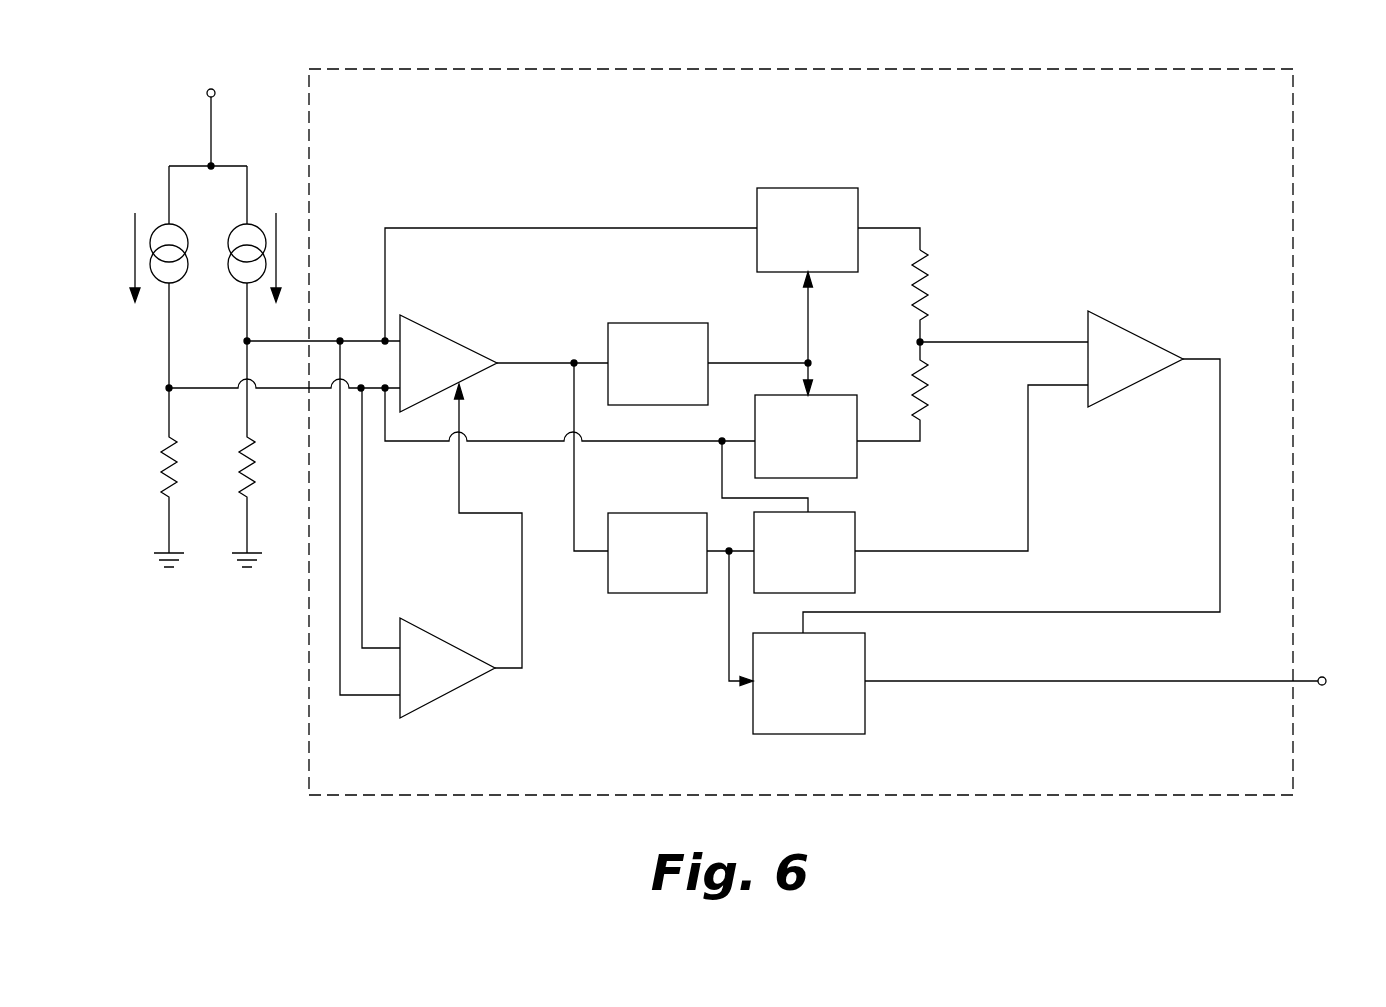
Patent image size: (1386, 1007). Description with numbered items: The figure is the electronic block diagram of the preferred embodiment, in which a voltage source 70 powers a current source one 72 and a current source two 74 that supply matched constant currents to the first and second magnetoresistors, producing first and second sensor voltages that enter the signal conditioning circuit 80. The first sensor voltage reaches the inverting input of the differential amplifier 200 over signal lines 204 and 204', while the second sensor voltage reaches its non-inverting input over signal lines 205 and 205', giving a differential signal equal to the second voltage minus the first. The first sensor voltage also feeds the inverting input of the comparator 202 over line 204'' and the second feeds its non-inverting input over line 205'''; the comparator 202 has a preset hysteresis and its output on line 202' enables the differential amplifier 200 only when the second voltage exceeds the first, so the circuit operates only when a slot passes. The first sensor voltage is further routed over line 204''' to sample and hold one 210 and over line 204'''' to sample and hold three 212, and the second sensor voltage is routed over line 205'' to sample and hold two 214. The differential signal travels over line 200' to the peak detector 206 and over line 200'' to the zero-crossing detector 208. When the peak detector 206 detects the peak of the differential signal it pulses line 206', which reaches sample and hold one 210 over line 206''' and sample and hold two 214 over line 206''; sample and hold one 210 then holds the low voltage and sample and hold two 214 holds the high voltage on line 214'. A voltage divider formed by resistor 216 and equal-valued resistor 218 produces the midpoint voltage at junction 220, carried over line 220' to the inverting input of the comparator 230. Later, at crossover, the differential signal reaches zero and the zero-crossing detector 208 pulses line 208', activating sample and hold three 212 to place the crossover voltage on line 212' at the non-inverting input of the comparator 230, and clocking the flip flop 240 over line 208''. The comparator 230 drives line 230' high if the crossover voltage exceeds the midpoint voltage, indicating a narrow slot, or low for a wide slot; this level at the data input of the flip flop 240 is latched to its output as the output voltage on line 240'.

The voltage source 70 is at (208, 310).
The current source1 72 is at (166, 224).
The current source2 74 is at (250, 224).
The signal conditioning circuit 80 is at (433, 68).
The differential amplifier 200 is at (448, 331).
The signal line 200' is at (552, 322).
The signal line 200'' is at (626, 457).
The comparator 202 is at (448, 637).
The signal line 202' is at (511, 526).
The signal line 204 is at (196, 402).
The signal line 204' is at (379, 434).
The signal line 204'' is at (407, 518).
The signal line 204''' is at (570, 443).
The signal line 204'''' is at (708, 476).
The signal line 205 is at (304, 256).
The signal line 205' is at (374, 264).
The signal line 205'' is at (571, 239).
The signal line 205''' is at (377, 550).
The peak detector 206 is at (648, 332).
The signal line 206' is at (731, 327).
The signal line 206'' is at (773, 317).
The signal line 206''' is at (853, 348).
The zero-crossing detector 208 is at (657, 588).
The signal line 208' is at (712, 513).
The signal line 208'' is at (701, 634).
The sample and hold1 210 is at (858, 458).
The sample and hold3 212 is at (857, 539).
The signal line 212' is at (971, 492).
The sample and hold2 214 is at (838, 193).
The signal line 214' is at (930, 202).
The resistor 216 is at (930, 257).
The resistor 218 is at (922, 364).
The junction 220 is at (936, 355).
The signal line 220' is at (1014, 296).
The comparator 230 is at (1136, 326).
The signal line 230' is at (1011, 496).
The flip flop 240 is at (826, 701).
The signal line 240' is at (1117, 709).